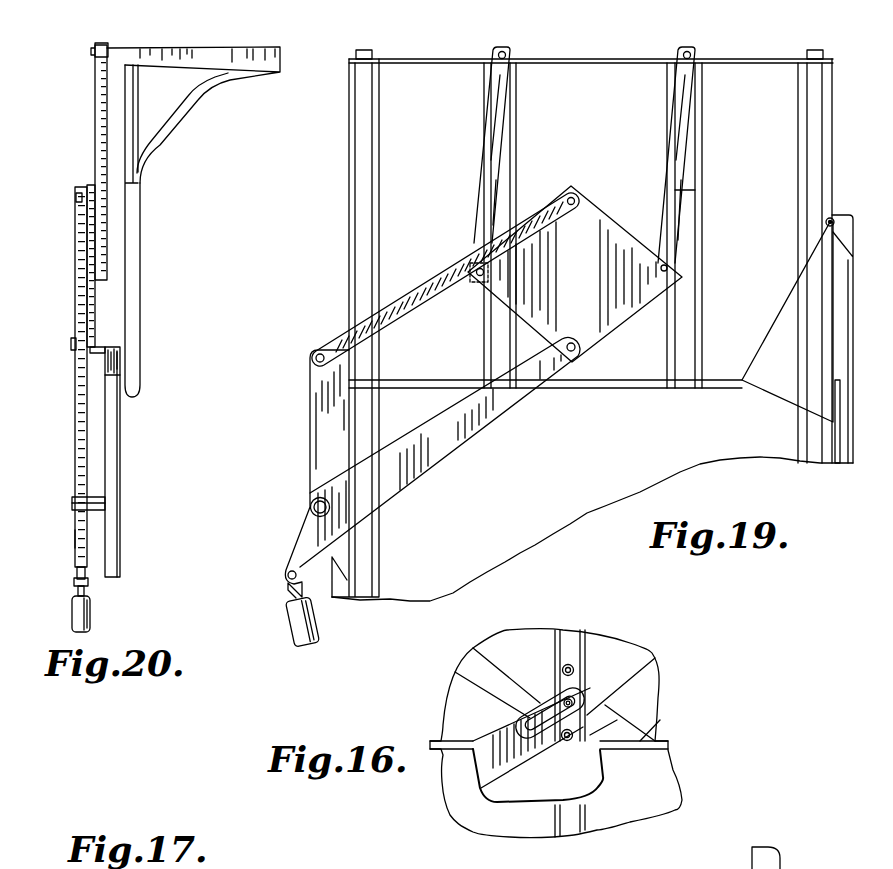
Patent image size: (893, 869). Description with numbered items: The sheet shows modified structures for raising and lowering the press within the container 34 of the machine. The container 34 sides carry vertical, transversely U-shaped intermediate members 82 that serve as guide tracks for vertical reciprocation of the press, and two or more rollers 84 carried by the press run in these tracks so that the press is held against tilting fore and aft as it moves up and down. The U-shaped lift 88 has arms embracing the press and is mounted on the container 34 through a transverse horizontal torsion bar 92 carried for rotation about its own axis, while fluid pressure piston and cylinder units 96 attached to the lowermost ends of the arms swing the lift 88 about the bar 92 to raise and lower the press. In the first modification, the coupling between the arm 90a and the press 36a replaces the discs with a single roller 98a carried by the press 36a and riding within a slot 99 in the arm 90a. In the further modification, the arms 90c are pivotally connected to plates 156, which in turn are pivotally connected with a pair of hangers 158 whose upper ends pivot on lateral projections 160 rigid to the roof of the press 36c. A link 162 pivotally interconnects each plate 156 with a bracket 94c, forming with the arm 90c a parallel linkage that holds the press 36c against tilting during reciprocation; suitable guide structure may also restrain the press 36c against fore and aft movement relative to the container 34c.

In FIG. 16, the container 34 is at (615, 831).
In FIG. 20, the container 34c is at (122, 447).
In FIG. 19, the container 34c is at (540, 547).
In FIG. 16, the press 36a is at (633, 634).
In FIG. 20, the press 36c is at (142, 283).
In FIG. 19, the press 36c is at (346, 212).
In FIG. 16, the intermediate members 82 is at (570, 816).
In FIG. 16, the rollers 84 is at (561, 668).
In FIG. 20, the lift 88 is at (70, 543).
In FIG. 19, the lift 88 is at (288, 532).
In FIG. 16, the arms 90a is at (497, 765).
In FIG. 20, the arms 90c is at (80, 414).
In FIG. 19, the arms 90c is at (452, 445).
In FIG. 20, the torsion bar 92 is at (98, 503).
In FIG. 19, the torsion bar 92 is at (310, 504).
In FIG. 20, the bracket 94c is at (115, 361).
In FIG. 19, the bracket 94c is at (315, 418).
In FIG. 20, the fluid pressure piston and cylinder units 96 is at (94, 614).
In FIG. 19, the fluid pressure piston and cylinder units 96 is at (330, 636).
In FIG. 16, the roller 98a is at (574, 700).
In FIG. 16, the slot 99 is at (517, 710).
In FIG. 20, the plates 156 is at (75, 324).
In FIG. 19, the plates 156 is at (618, 313).
In FIG. 20, the hangers 158 is at (97, 135).
In FIG. 19, the hangers 158 is at (490, 165).
In FIG. 20, the lateral projections 160 is at (195, 62).
In FIG. 19, the lateral projections 160 is at (678, 52).
In FIG. 20, the link 162 is at (82, 244).
In FIG. 19, the link 162 is at (438, 284).